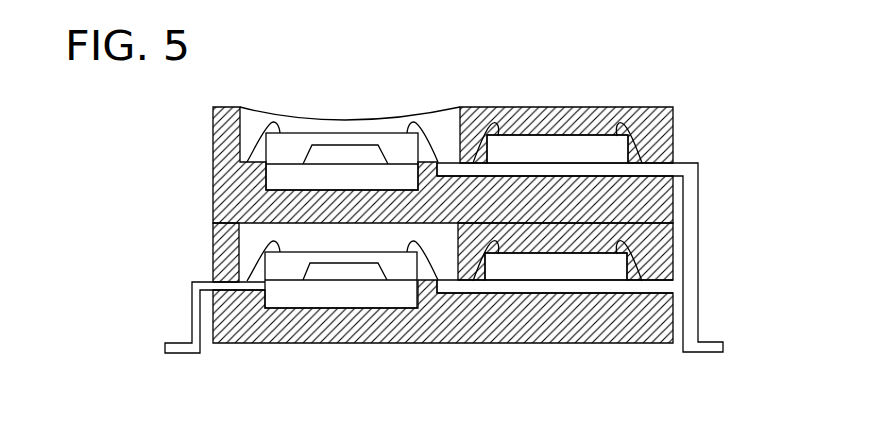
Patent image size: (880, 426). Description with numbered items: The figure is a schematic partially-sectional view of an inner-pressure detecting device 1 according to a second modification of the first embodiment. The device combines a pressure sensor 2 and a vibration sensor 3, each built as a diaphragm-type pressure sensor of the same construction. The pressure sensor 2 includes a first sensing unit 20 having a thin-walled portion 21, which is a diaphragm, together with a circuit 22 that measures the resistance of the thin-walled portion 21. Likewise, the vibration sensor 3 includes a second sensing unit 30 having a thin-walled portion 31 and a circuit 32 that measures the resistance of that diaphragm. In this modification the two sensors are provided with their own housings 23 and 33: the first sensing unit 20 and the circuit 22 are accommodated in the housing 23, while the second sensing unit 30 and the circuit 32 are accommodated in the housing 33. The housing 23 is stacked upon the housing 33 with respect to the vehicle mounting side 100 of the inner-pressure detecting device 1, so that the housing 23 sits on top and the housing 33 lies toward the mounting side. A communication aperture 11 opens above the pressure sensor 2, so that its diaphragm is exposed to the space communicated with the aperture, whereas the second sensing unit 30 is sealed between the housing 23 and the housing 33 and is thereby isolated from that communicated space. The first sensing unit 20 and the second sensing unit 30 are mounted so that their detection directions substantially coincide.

The inner-pressure detecting device 1 is at (642, 75).
The pressure sensor 2 is at (480, 118).
The vibration sensor 3 is at (660, 247).
The communication aperture 11 is at (436, 147).
The sensing unit 20 is at (270, 148).
The thin-walled portion 21 is at (331, 143).
The circuit 22 is at (551, 147).
The housing 23 is at (222, 170).
The sensing unit 30 is at (283, 268).
The thin-walled portion 31 is at (342, 257).
The circuit 32 is at (553, 267).
The housing 33 is at (222, 239).
The vehicle mounting side 100 is at (446, 343).